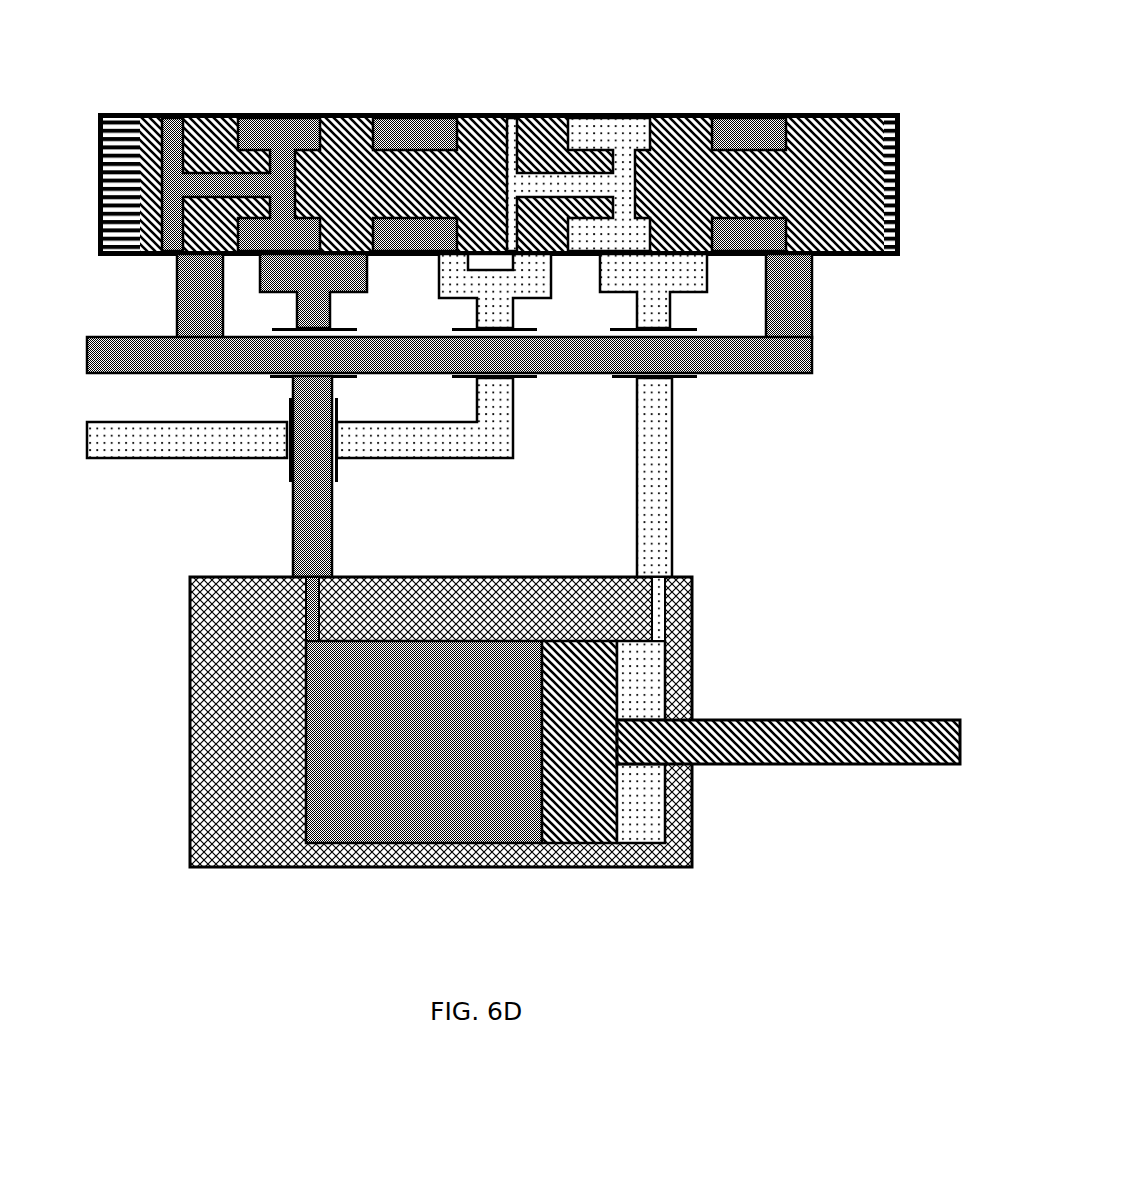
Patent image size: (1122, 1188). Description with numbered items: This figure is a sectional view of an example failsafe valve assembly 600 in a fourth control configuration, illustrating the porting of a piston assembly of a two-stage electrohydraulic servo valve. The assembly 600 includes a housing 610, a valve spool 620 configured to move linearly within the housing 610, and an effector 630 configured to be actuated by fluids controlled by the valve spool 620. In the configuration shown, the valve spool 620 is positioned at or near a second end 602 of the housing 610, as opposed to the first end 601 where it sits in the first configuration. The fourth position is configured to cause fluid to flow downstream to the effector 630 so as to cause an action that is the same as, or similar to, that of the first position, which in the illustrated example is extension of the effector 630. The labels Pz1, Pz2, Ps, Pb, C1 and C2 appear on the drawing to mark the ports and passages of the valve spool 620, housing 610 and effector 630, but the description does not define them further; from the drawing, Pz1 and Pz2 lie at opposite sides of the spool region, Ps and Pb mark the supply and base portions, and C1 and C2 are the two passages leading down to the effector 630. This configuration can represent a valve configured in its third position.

The failsafe valve assembly 600 is at (486, 134).
The first end 601 is at (101, 108).
The second end 602 is at (897, 262).
The housing 610 is at (185, 115).
The valve spool 620 is at (837, 133).
The effector 630 is at (256, 563).
The first piezoelectric electrode Pz1 is at (96, 184).
The second piezoelectric electrode Pz2 is at (920, 184).
The support plate Ps is at (432, 315).
The base plate Pb is at (282, 418).
The first connecting rod C1 is at (331, 477).
The second connecting rod C2 is at (677, 478).